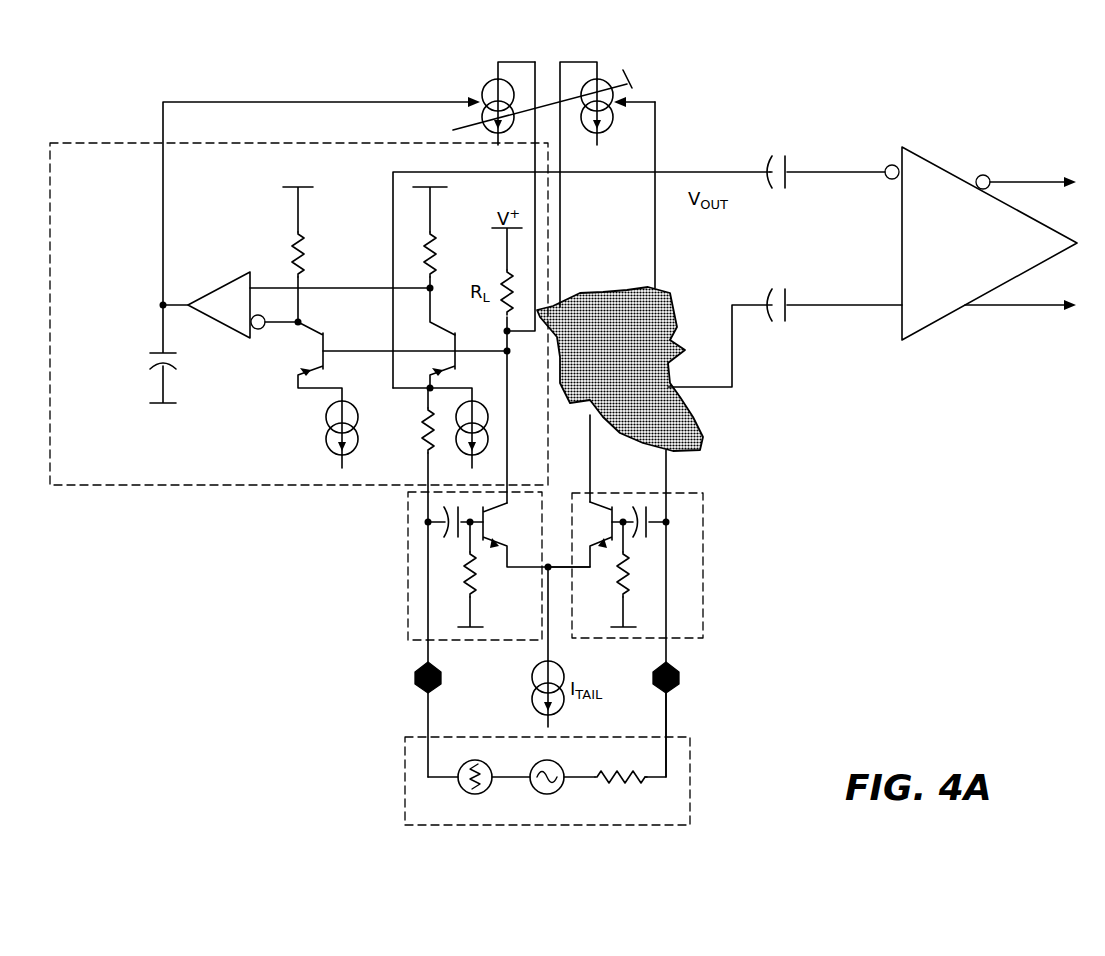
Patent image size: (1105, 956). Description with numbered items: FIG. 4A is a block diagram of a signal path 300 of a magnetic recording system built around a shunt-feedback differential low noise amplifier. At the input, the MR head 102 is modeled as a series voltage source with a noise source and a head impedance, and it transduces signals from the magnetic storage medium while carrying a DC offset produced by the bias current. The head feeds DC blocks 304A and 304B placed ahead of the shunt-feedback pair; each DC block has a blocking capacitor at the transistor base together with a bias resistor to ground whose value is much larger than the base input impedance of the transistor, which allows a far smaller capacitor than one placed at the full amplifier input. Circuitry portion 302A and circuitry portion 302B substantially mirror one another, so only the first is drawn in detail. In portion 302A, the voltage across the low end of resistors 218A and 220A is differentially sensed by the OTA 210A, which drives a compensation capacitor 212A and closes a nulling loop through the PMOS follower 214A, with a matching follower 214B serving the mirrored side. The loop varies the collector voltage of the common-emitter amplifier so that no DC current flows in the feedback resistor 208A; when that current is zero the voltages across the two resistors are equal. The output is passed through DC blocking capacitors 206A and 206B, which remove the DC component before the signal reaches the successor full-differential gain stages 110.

The signal path 300 is at (118, 91).
The circuitry portion 302A is at (128, 141).
The circuitry portion 302B is at (705, 430).
The OTA 210A is at (203, 318).
The compensation capacitor 212A is at (157, 350).
The resistor 218A is at (306, 233).
The resistor 220A is at (438, 232).
The PMOS follower 214A is at (494, 82).
The PMOS follower 214B is at (604, 80).
The feedback resistor 208A is at (420, 456).
The DC block 304A is at (407, 552).
The DC block 304B is at (703, 525).
The magnetoresistive head 102 is at (690, 770).
The DC blocking capacitor 206A is at (790, 160).
The DC blocking capacitor 206B is at (787, 316).
The successor gain stages 110 is at (935, 155).